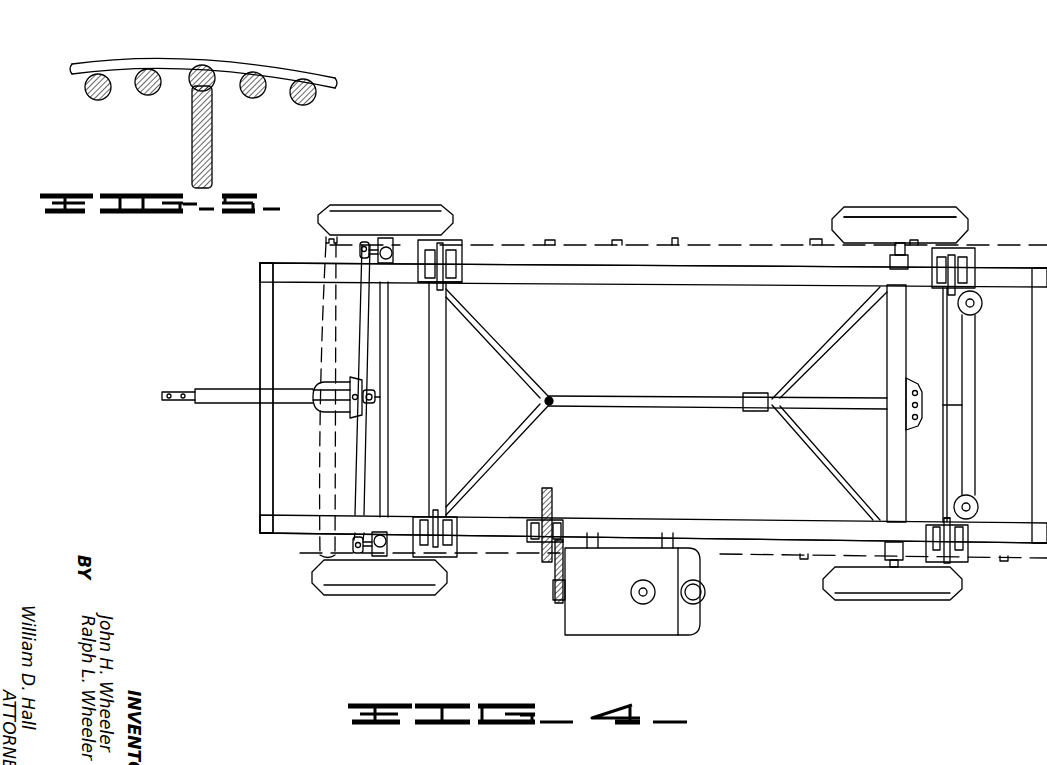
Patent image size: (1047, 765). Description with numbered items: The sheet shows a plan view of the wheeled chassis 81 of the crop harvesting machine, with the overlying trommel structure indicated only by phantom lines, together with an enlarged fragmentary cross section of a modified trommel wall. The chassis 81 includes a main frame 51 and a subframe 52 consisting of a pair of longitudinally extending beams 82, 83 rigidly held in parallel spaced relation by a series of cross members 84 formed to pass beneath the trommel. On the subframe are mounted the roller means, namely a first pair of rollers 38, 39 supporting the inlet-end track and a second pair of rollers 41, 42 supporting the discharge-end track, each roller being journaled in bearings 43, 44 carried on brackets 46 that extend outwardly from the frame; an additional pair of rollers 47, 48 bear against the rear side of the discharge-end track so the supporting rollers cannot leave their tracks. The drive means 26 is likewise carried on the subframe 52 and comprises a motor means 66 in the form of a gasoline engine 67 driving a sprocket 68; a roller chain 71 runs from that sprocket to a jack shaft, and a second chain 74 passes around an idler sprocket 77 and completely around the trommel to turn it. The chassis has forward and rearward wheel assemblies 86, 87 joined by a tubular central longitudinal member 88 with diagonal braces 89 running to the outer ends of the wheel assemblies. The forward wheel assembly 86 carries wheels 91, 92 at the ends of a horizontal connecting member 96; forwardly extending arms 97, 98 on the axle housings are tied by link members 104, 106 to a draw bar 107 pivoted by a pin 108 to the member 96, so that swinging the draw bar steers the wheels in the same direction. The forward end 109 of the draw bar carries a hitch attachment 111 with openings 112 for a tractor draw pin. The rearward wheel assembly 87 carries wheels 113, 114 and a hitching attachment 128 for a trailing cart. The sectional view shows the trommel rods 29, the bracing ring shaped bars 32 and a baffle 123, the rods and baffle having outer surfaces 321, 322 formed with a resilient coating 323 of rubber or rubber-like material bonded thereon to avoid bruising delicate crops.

In FIG. 4, the drive means 26 is at (615, 580).
In FIG. 5, the rods 29 is at (138, 96).
In FIG. 5, the ring shaped bars 32 is at (227, 62).
In FIG. 4, the roller 38 is at (440, 520).
In FIG. 4, the roller 39 is at (441, 250).
In FIG. 4, the roller 41 is at (947, 519).
In FIG. 4, the roller 42 is at (951, 292).
In FIG. 4, the bearing 43 is at (429, 258).
In FIG. 4, the bearing 44 is at (452, 258).
In FIG. 4, the brackets 46 is at (462, 263).
In FIG. 4, the roller 47 is at (979, 507).
In FIG. 4, the roller 48 is at (983, 303).
In FIG. 4, the main frame 51 is at (702, 397).
In FIG. 4, the subframe 52 is at (707, 264).
In FIG. 4, the motor means 66 is at (630, 637).
In FIG. 4, the gasoline engine 67 is at (668, 615).
In FIG. 4, the sprocket 68 is at (554, 596).
In FIG. 4, the roller chain 71 is at (555, 573).
In FIG. 4, the second chain 74 is at (552, 496).
In FIG. 4, the idler sprocket 77 is at (565, 530).
In FIG. 4, the chassis 81 is at (290, 558).
In FIG. 4, the beam 82 is at (736, 522).
In FIG. 4, the beam 83 is at (747, 285).
In FIG. 4, the cross members 84 is at (259, 470).
In FIG. 4, the forward wheel assembly 86 is at (374, 199).
In FIG. 4, the rearward wheel assembly 87 is at (910, 205).
In FIG. 4, the central longitudinal member 88 is at (630, 396).
In FIG. 4, the diagonal braces 89 is at (492, 356).
In FIG. 4, the wheel 91 is at (342, 586).
In FIG. 4, the wheel 92 is at (332, 210).
In FIG. 4, the connecting member 96 is at (389, 343).
In FIG. 4, the arm 97 is at (366, 553).
In FIG. 4, the arm 98 is at (372, 244).
In FIG. 4, the link member 104 is at (325, 478).
In FIG. 4, the link member 106 is at (357, 321).
In FIG. 4, the draw bar 107 is at (283, 396).
In FIG. 4, the pin 108 is at (376, 401).
In FIG. 4, the forward end 109 is at (222, 372).
In FIG. 4, the hitch attachment 111 is at (164, 390).
In FIG. 4, the openings 112 is at (182, 400).
In FIG. 4, the wheel 113 is at (942, 590).
In FIG. 4, the wheel 114 is at (950, 218).
In FIG. 5, the baffles 123 is at (202, 143).
In FIG. 4, the hitching attachment 128 is at (923, 401).
In FIG. 5, the outer surface 321 is at (153, 72).
In FIG. 5, the outer surface 322 is at (213, 113).
In FIG. 5, the coating 323 is at (150, 95).